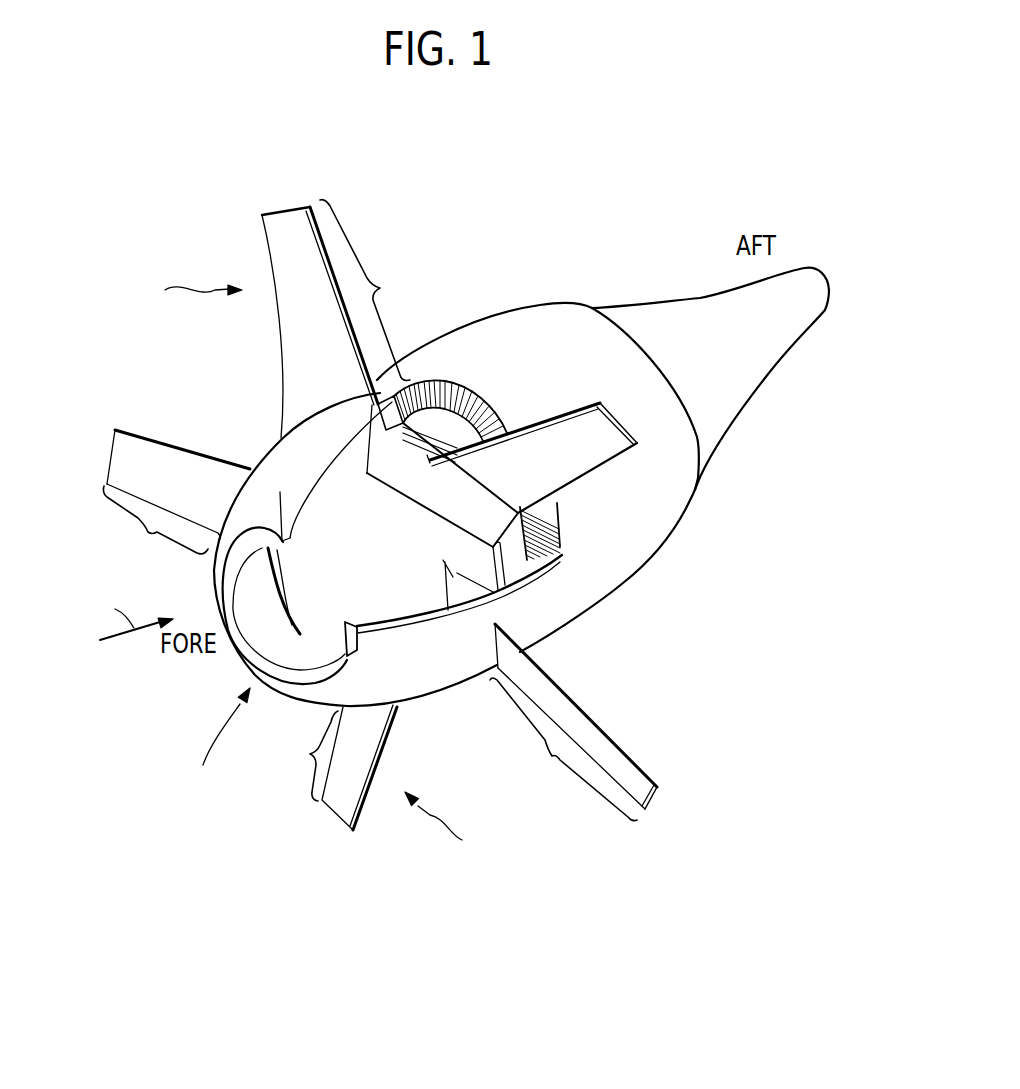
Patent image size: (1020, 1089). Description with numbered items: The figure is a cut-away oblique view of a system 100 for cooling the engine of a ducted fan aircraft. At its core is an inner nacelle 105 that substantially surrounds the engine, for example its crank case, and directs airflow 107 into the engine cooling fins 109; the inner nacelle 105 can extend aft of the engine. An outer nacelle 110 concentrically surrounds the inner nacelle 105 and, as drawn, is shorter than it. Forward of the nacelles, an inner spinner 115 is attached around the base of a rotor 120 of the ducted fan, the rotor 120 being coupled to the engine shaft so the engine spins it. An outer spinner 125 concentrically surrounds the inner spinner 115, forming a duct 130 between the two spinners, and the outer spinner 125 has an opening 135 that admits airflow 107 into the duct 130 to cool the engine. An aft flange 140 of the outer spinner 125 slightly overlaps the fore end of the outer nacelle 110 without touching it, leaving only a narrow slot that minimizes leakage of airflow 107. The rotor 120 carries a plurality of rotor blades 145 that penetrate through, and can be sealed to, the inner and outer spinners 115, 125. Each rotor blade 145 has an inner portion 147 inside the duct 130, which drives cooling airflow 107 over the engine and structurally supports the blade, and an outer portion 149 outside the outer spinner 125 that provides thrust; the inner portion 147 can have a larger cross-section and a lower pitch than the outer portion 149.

The system for cooling an engine 100 is at (770, 635).
The inner nacelle 105 is at (778, 352).
The airflow 107 is at (123, 616).
The engine cooling fins 109 is at (452, 388).
The outer nacelle 110 is at (658, 552).
The inner spinner 115 is at (283, 570).
The rotor 120 is at (314, 562).
The outer spinner 125 is at (456, 692).
The duct 130 is at (323, 470).
The opening 135 is at (205, 734).
The aft flange 140 is at (395, 386).
The rotor blades 145 is at (283, 207).
The inner portion 147 is at (365, 448).
The outer portion 149 is at (368, 510).